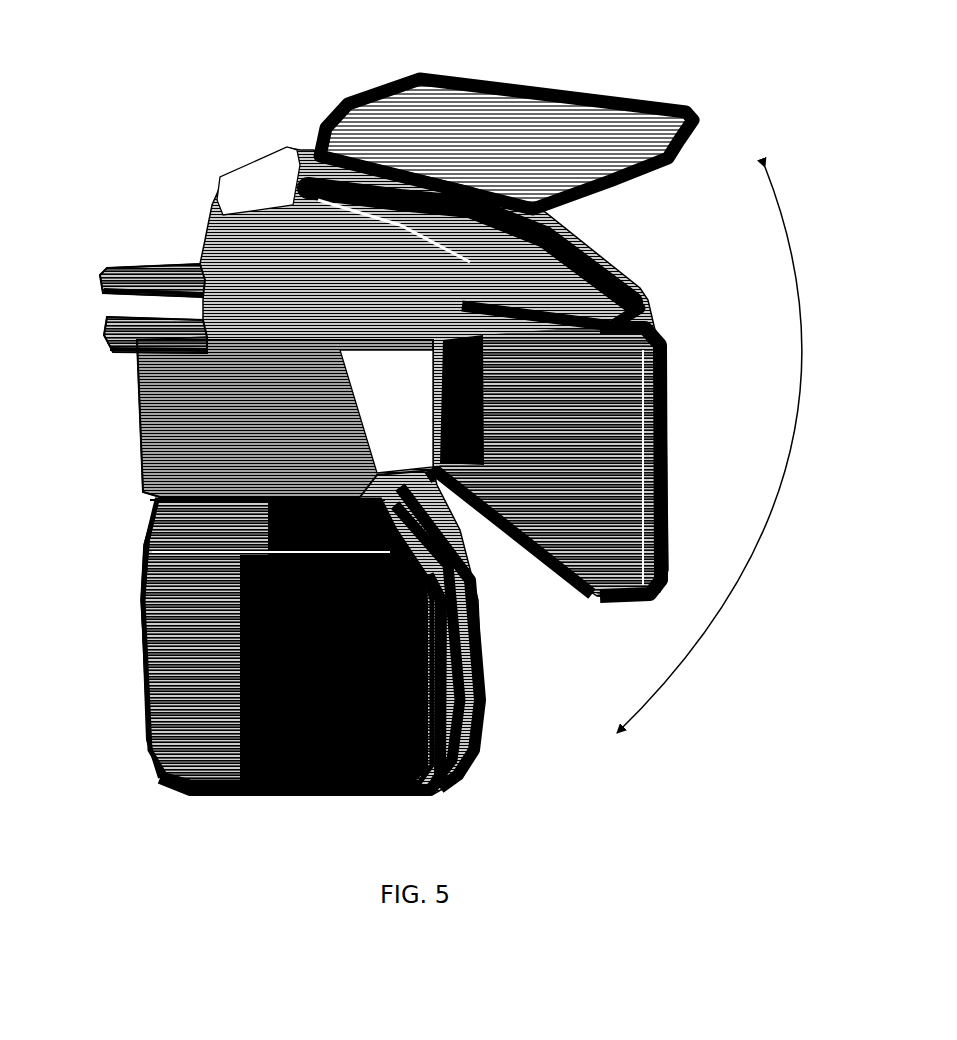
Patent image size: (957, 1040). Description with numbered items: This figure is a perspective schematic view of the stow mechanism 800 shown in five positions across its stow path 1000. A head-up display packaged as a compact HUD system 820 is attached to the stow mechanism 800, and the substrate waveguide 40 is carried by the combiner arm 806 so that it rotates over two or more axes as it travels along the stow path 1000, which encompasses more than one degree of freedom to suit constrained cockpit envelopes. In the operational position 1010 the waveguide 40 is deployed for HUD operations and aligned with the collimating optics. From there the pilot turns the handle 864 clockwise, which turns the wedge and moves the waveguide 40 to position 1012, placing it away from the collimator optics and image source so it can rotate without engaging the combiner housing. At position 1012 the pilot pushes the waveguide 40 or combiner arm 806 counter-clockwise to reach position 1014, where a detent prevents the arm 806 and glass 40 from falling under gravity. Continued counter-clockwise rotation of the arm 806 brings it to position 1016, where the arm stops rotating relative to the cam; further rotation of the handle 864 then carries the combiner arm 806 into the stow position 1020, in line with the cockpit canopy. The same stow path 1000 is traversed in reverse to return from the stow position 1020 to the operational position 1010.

The stow mechanism 800 is at (187, 145).
The handle 864 is at (152, 277).
The combiner arm 806 is at (148, 447).
The compact HUD system 820 is at (115, 799).
The substrate waveguide 40 is at (288, 683).
The operational position 1010 is at (480, 710).
The position 1012 is at (433, 785).
The position 1014 is at (667, 476).
The position 1016 is at (600, 263).
The stow position 1020 is at (703, 117).
The stow path 1000 is at (734, 450).